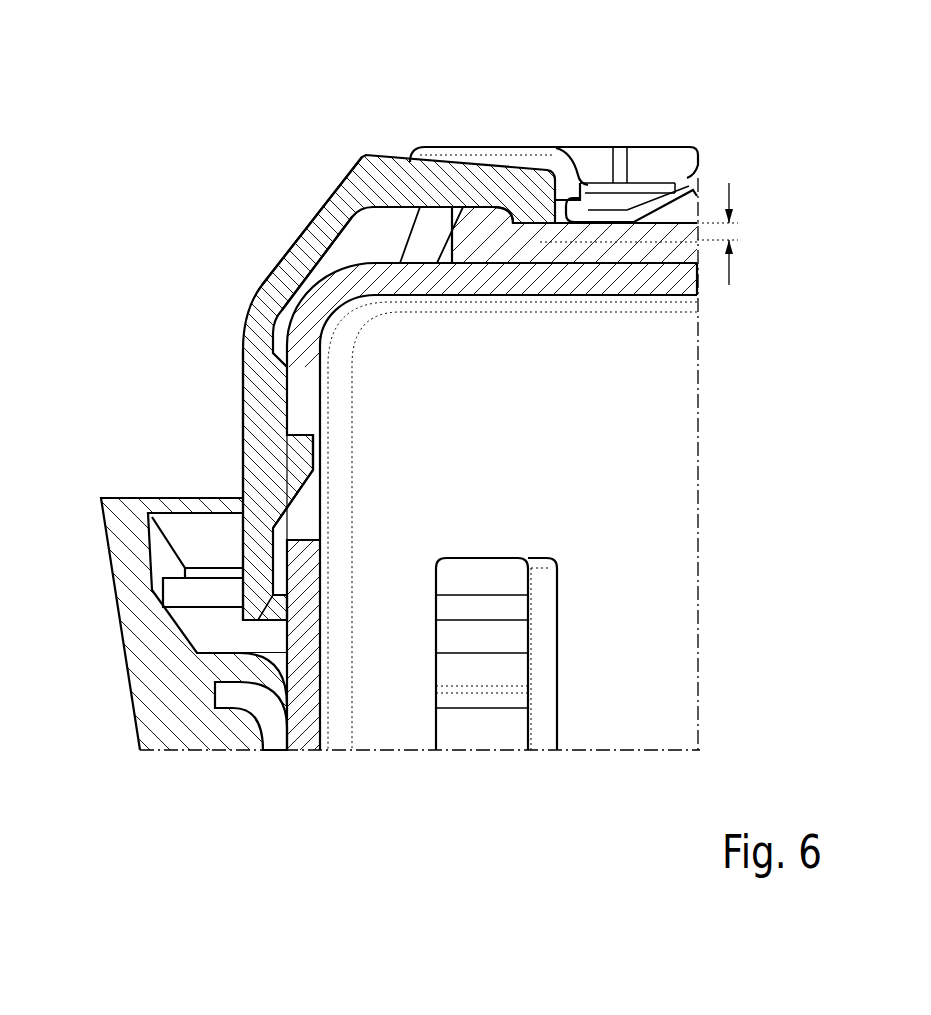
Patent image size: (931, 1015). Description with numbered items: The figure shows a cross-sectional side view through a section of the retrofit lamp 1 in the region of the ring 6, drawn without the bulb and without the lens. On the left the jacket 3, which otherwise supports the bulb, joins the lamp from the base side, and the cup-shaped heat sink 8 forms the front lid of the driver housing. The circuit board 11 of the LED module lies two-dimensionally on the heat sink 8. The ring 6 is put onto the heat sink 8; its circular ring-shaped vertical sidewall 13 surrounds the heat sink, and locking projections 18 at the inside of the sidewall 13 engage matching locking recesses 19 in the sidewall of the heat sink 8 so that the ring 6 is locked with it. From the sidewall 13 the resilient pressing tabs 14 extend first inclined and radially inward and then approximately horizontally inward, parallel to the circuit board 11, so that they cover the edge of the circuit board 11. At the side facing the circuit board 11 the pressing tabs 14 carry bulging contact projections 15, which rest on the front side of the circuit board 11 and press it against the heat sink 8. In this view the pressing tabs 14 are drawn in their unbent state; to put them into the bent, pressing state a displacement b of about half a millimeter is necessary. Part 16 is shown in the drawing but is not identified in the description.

The retrofit lamp 1 is at (278, 88).
The jacket 3 is at (118, 497).
The ring 6 is at (399, 387).
The heat sink 8 is at (675, 482).
The circuit board 11 is at (643, 250).
The sidewall 13 is at (255, 370).
The pressing tabs 14 is at (330, 230).
The contact projections 15 is at (535, 230).
The cover element 16 is at (512, 147).
The locking projections 18 is at (303, 453).
The locking recesses 19 is at (308, 508).
The displacement b is at (735, 230).